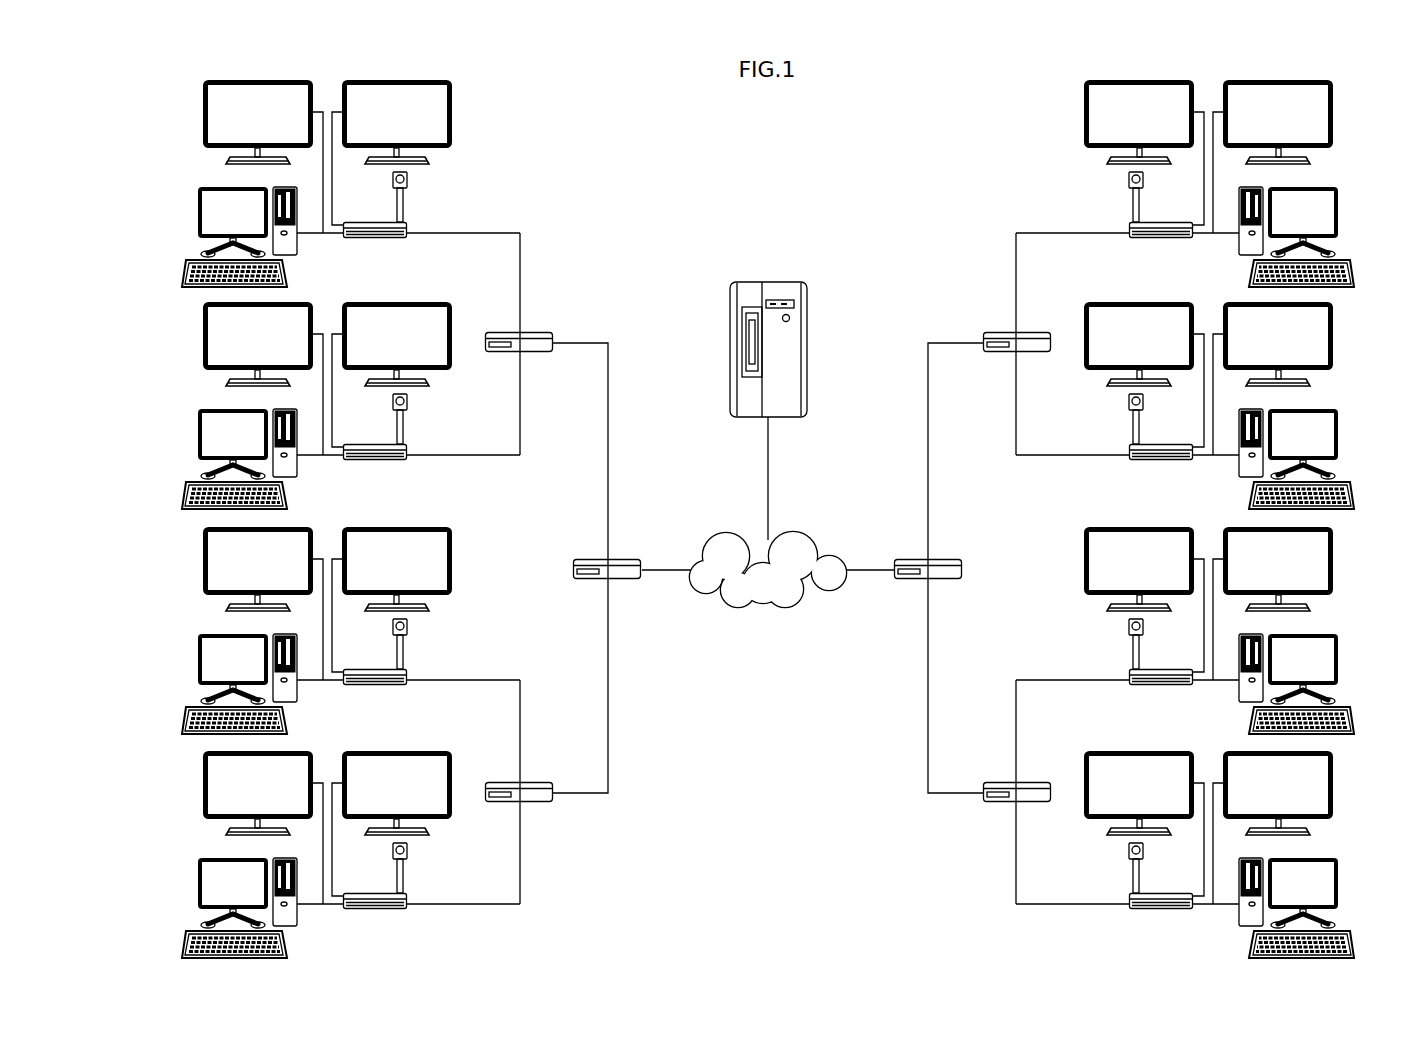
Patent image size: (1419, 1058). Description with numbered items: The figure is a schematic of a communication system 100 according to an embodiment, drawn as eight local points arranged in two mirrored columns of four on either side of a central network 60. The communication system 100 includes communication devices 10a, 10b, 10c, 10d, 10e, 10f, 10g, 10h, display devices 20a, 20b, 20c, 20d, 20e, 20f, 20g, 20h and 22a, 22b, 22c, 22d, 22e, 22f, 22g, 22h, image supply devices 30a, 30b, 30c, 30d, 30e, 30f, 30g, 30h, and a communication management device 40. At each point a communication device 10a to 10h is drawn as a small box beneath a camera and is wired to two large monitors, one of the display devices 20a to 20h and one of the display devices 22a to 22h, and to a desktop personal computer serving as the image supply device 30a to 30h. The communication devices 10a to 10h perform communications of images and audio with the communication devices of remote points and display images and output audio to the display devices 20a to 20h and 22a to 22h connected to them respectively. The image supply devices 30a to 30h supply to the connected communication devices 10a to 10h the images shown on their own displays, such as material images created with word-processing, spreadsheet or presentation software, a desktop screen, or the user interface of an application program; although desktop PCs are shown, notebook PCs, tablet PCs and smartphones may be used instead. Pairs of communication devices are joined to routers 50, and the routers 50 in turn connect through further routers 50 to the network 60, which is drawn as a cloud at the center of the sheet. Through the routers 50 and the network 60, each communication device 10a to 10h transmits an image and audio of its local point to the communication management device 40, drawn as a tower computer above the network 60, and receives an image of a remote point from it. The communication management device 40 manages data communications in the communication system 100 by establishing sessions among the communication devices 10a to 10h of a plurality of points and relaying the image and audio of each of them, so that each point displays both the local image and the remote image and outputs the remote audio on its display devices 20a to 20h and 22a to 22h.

The communication system 100 is at (787, 146).
The communication device 10a is at (372, 238).
The communication device 10b is at (372, 460).
The communication device 10c is at (372, 685).
The communication device 10d is at (372, 909).
The communication device 10e is at (1163, 238).
The communication device 10f is at (1163, 460).
The communication device 10g is at (1163, 685).
The communication device 10h is at (1163, 909).
The display device 20a is at (203, 112).
The display device 20b is at (203, 334).
The display device 20c is at (203, 559).
The display device 20d is at (203, 783).
The display device 20e is at (1086, 112).
The display device 20f is at (1108, 302).
The display device 20g is at (1086, 559).
The display device 20h is at (1108, 751).
The display device 22a is at (452, 112).
The display device 22b is at (432, 302).
The display device 22c is at (452, 559).
The display device 22d is at (432, 751).
The display device 22e is at (1333, 112).
The display device 22f is at (1333, 334).
The display device 22g is at (1333, 559).
The display device 22h is at (1333, 783).
The image supply device 30a is at (198, 208).
The image supply device 30b is at (198, 430).
The image supply device 30c is at (198, 655).
The image supply device 30d is at (198, 879).
The image supply device 30e is at (1338, 208).
The image supply device 30f is at (1338, 430).
The image supply device 30g is at (1338, 655).
The image supply device 30h is at (1338, 879).
The communication management device 40 is at (780, 282).
The router 50 is at (541, 332).
The network 60 is at (796, 536).